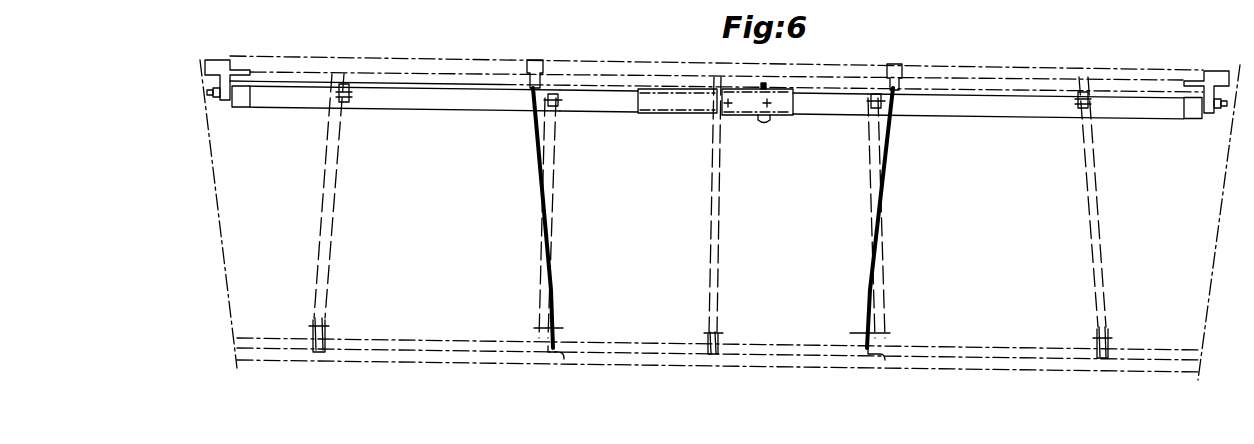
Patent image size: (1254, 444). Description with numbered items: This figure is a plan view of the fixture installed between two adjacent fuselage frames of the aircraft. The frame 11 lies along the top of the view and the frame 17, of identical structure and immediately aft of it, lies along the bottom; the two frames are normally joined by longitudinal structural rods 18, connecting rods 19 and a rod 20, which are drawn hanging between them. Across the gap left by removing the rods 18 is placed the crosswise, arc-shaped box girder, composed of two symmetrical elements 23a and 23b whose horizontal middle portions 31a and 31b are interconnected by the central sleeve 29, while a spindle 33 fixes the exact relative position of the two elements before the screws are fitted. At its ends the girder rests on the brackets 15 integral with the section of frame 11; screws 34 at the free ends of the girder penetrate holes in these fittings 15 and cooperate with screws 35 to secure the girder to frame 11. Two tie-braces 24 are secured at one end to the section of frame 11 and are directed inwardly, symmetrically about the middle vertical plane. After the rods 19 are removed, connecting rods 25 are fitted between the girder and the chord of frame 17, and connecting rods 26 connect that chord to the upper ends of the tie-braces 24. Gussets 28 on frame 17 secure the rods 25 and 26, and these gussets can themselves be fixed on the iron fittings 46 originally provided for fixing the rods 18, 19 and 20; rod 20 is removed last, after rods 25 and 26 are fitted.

The frame 11 is at (459, 61).
The brackets 15 is at (230, 100).
The frame 17 is at (670, 367).
The structural rods 18 is at (328, 250).
The connecting rods 19 is at (540, 287).
The structural rod 20 is at (717, 280).
The girder element 23a is at (472, 104).
The girder element 23b is at (997, 105).
The tie-braces 24 is at (544, 88).
The connecting rods 25 is at (557, 215).
The connecting rods 26 is at (872, 232).
The gussets 28 is at (564, 359).
The central sleeve 29 is at (688, 102).
The middle portion 31a is at (594, 103).
The middle portion 31b is at (838, 103).
The spindle 33 is at (768, 124).
The screws 34 is at (232, 82).
The screws 35 is at (207, 95).
The iron fittings 46 is at (323, 333).